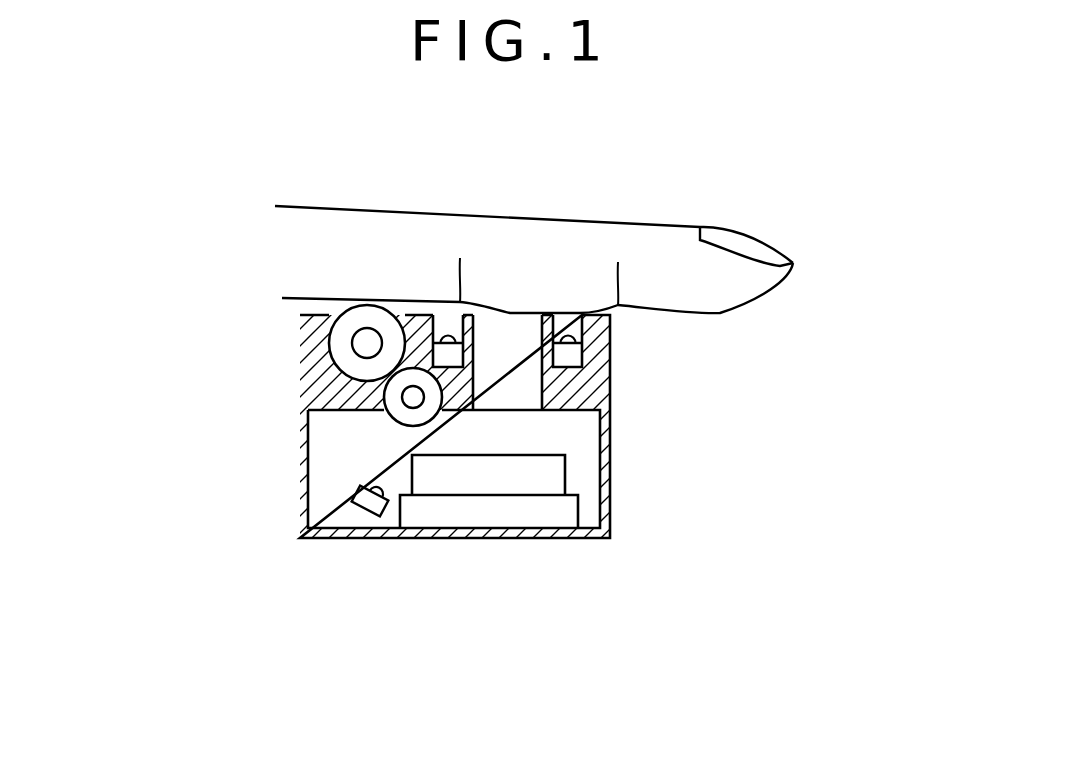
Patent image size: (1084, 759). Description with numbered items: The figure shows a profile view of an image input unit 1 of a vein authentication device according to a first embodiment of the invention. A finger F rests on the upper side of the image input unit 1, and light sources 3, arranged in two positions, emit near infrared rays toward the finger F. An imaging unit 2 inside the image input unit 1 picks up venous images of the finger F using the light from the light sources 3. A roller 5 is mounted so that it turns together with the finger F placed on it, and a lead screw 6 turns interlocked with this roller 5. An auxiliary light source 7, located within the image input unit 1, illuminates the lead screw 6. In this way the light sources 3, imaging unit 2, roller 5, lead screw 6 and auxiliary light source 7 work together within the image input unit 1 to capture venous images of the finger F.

The image input unit 1 is at (610, 508).
The imaging unit 2 is at (473, 512).
The light source 3 is at (572, 358).
The roller 5 is at (352, 340).
The lead screw 6 is at (390, 398).
The auxiliary light source 7 is at (355, 492).
The finger F is at (605, 233).